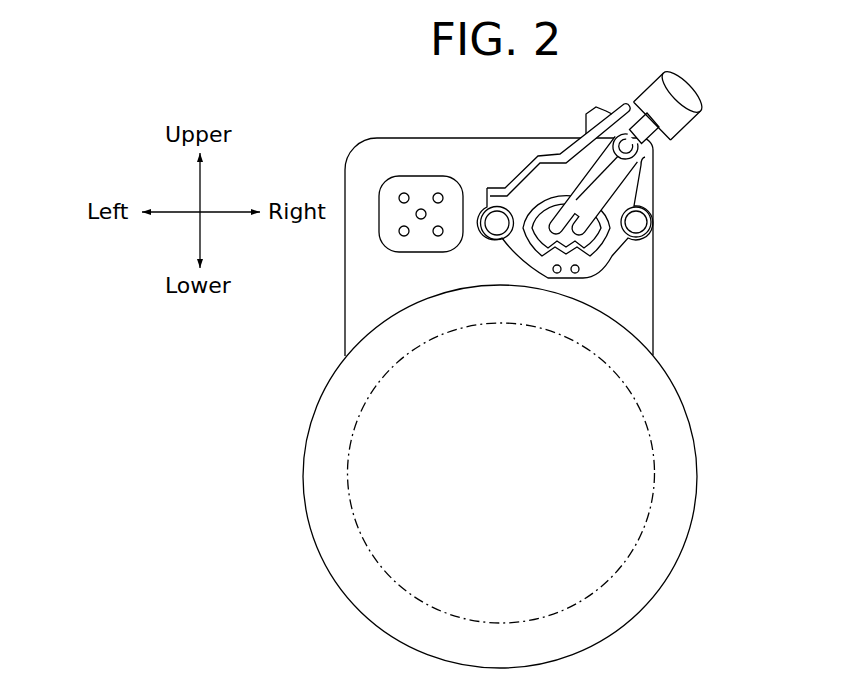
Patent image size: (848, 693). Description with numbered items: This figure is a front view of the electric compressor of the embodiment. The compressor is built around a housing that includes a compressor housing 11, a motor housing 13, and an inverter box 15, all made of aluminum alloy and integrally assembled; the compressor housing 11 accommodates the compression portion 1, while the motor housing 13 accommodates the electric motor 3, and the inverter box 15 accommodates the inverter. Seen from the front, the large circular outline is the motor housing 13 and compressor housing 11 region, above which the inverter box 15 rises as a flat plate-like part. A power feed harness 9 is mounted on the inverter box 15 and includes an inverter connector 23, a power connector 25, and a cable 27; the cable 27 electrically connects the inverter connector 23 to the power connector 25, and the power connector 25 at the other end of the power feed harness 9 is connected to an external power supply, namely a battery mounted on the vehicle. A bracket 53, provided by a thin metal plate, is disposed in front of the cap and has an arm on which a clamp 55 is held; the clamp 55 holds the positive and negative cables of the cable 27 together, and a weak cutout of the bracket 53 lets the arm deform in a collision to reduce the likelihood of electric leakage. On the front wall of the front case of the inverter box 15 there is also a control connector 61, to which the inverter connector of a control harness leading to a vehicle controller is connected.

The compression portion 1 is at (552, 473).
The electric motor 3 is at (632, 483).
The power feed harness 9 is at (663, 164).
The compressor housing 11 is at (543, 476).
The motor housing 13 is at (673, 437).
The inverter box 15 is at (364, 310).
The inverter connector 23 is at (601, 269).
The power connector 25 is at (670, 123).
The cable 27 is at (567, 193).
The bracket 53 is at (613, 246).
The clamp 55 is at (585, 113).
The control connector 61 is at (418, 183).